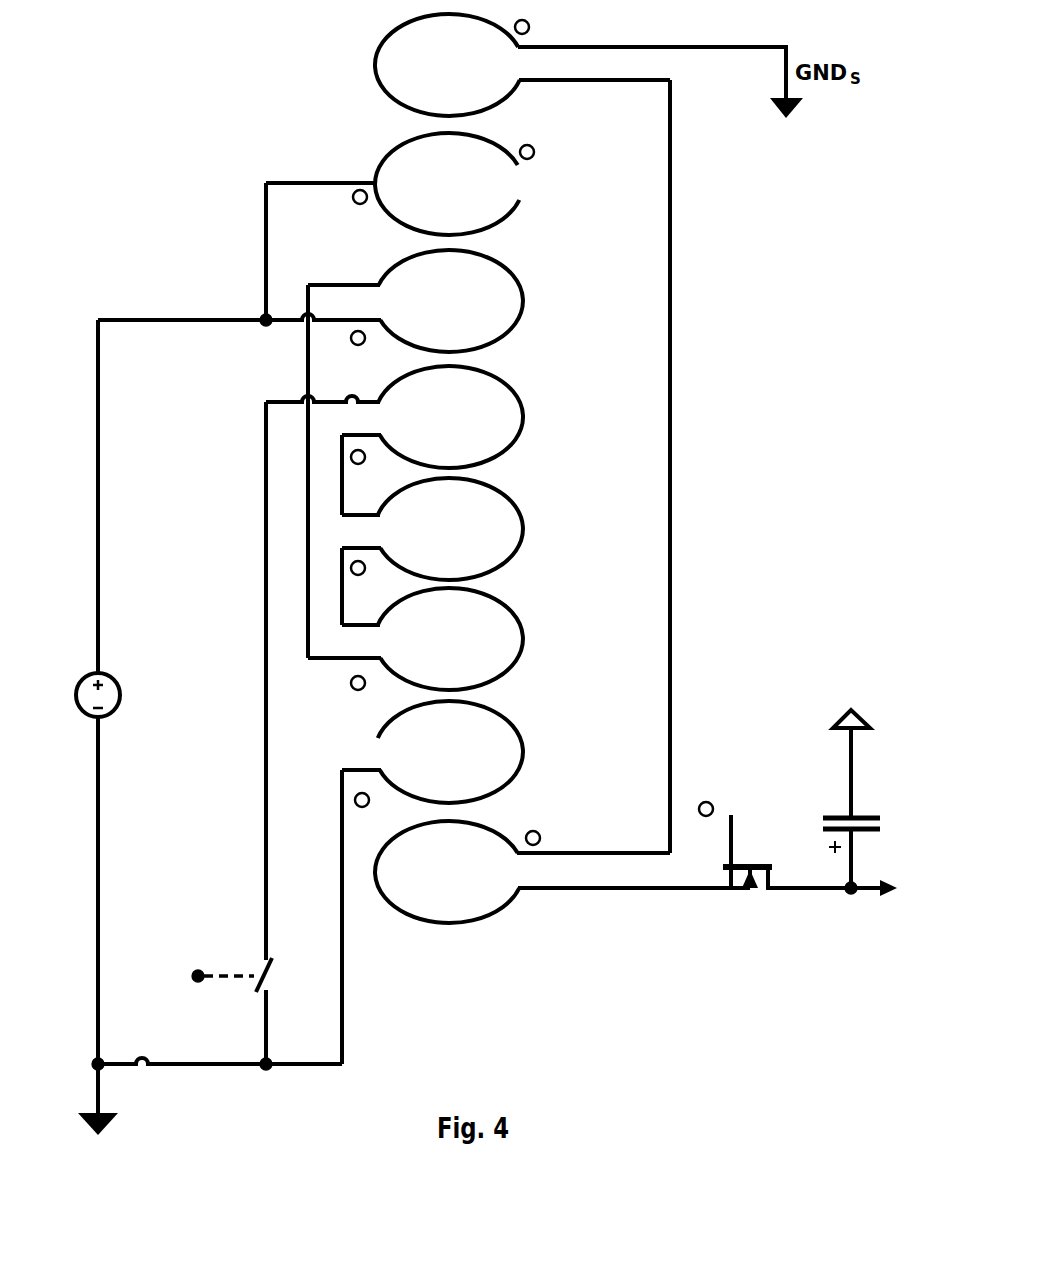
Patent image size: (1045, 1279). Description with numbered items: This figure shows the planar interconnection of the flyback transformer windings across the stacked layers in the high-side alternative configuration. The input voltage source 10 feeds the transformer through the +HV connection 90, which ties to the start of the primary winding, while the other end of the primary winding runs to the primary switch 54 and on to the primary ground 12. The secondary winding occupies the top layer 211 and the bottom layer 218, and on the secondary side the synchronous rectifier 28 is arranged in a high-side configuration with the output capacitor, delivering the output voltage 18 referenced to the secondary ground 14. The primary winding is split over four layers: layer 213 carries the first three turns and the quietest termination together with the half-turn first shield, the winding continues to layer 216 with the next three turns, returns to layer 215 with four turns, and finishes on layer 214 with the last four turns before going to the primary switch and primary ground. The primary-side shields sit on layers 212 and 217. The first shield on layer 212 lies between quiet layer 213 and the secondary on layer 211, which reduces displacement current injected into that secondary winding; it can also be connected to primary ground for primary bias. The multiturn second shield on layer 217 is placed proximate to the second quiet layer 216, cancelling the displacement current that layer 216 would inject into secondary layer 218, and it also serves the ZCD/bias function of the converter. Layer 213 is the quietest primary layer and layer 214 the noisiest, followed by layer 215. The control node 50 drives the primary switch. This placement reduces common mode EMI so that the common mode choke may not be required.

The input voltage source 10 is at (70, 396).
The primary GNDp 12 is at (178, 1103).
The secondary ground GNDs 14 is at (879, 743).
The output voltage Vo 18 is at (886, 916).
The synchronous rectifier 28 is at (748, 849).
The control voltage input 50 is at (202, 991).
The primary switch 54 is at (268, 976).
The +HV connection 90 is at (148, 283).
The top secondary winding layer 211 is at (553, 65).
The first shield layer 212 is at (553, 184).
The first primary winding layer 213 is at (553, 300).
The fourth primary winding layer 214 is at (553, 408).
The third primary winding layer 215 is at (553, 524).
The second primary winding layer 216 is at (553, 634).
The second shield layer 217 is at (553, 742).
The bottom secondary winding layer 218 is at (553, 870).